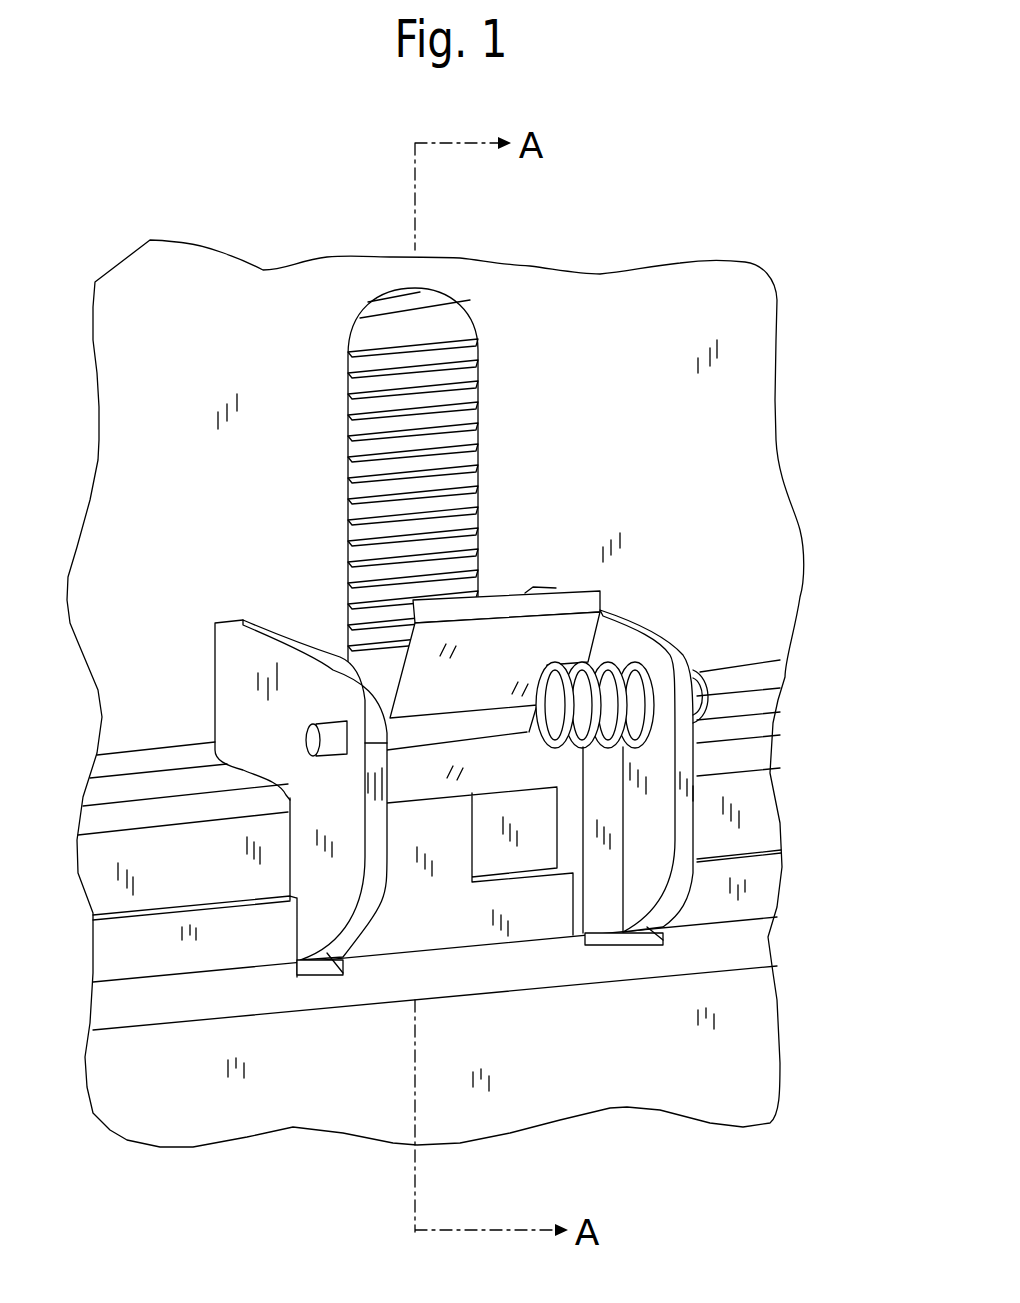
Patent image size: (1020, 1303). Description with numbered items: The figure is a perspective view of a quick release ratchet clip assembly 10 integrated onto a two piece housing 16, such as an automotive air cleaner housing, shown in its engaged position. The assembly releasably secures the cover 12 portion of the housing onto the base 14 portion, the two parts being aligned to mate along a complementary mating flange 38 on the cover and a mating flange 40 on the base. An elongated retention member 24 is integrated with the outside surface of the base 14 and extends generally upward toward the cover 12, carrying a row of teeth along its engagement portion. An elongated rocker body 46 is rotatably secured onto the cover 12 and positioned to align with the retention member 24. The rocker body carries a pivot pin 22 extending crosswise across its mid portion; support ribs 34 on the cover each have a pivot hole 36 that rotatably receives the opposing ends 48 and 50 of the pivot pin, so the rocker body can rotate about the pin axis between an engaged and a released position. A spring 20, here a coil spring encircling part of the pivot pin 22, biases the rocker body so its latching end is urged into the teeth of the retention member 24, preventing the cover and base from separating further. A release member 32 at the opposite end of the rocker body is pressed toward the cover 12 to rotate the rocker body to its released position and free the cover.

The quick release ratchet clip assembly 10 is at (565, 461).
The cover 12 is at (152, 337).
The base 14 is at (292, 1076).
The housing 16 is at (808, 300).
The spring 20 is at (598, 747).
The pivot pin 22 is at (415, 745).
The elongated retention member 24 is at (348, 381).
The release member 32 is at (577, 606).
The support ribs 34 is at (627, 848).
The pivot hole 36 is at (346, 764).
The mating flange 38 is at (160, 883).
The mating flange 40 is at (211, 955).
The rocker body 46 is at (452, 698).
The pivot pin end 48 is at (306, 736).
The pivot pin end 50 is at (706, 683).